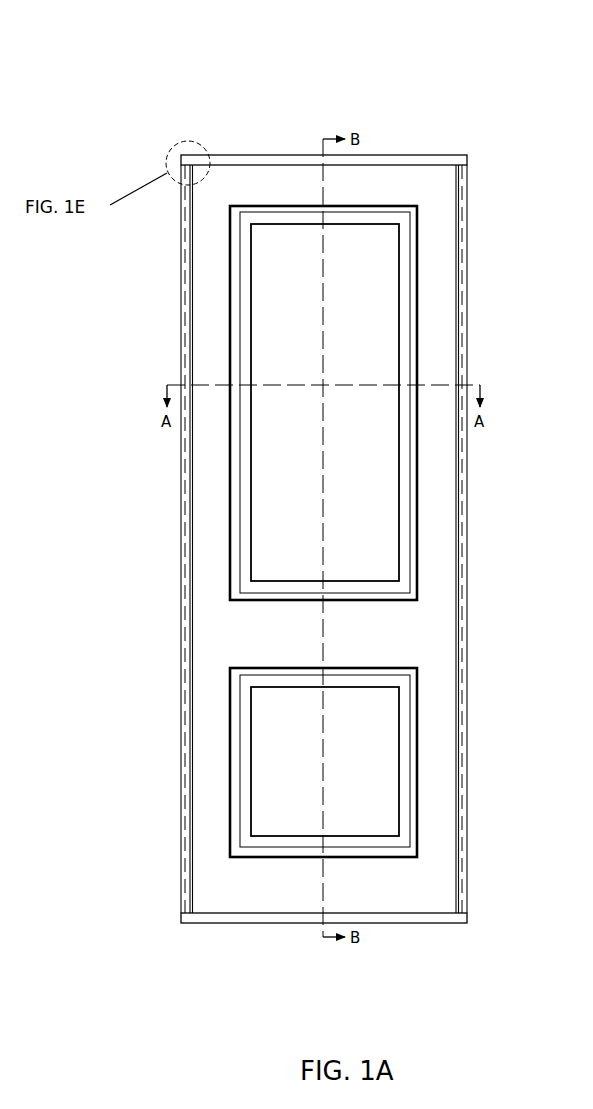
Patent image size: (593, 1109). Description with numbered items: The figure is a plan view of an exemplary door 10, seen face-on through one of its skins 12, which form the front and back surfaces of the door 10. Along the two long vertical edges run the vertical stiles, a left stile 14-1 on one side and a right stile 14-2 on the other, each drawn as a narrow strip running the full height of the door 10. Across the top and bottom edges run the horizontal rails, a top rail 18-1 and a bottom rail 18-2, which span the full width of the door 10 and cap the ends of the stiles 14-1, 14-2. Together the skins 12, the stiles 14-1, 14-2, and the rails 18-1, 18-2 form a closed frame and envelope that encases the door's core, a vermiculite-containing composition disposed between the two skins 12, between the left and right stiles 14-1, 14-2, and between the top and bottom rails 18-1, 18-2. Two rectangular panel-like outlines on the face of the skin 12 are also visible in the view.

The door 10 is at (150, 78).
The skins 12 is at (435, 307).
The left stile 14-1 is at (180, 560).
The right stile 14-2 is at (465, 557).
The top rail 18-1 is at (428, 165).
The bottom rail 18-2 is at (450, 919).